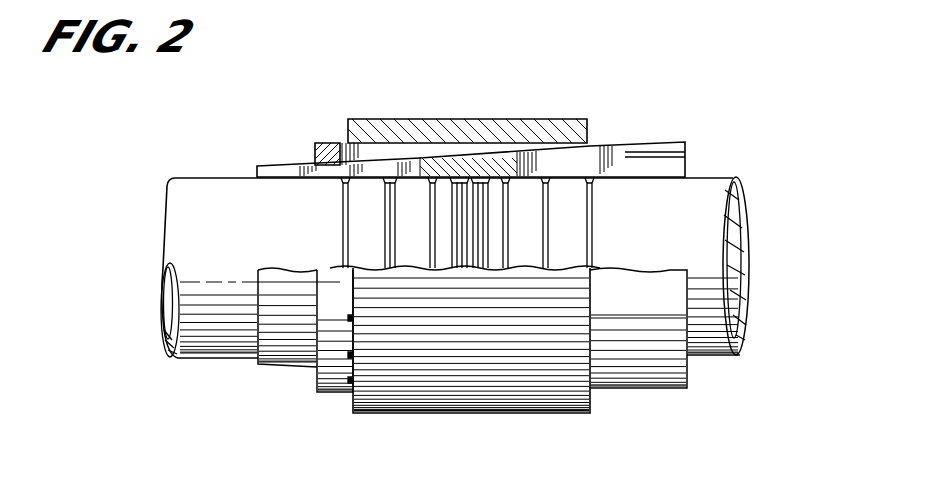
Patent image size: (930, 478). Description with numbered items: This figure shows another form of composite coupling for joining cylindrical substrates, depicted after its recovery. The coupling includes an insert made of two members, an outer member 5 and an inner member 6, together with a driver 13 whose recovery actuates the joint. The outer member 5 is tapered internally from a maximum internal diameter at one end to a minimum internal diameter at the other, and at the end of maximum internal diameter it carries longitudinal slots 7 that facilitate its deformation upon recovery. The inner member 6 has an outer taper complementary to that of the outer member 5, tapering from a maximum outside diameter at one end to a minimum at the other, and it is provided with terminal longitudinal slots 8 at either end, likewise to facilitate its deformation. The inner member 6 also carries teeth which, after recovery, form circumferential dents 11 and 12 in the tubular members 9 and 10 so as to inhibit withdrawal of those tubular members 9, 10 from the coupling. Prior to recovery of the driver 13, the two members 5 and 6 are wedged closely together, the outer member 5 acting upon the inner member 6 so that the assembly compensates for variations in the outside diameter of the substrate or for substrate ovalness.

The outer member 5 is at (316, 142).
The inner member 6 is at (268, 165).
The longitudinal slots 7 is at (690, 378).
The terminal longitudinal slots 8 is at (258, 312).
The tubular member 9 is at (175, 218).
The tubular member 10 is at (700, 207).
The circumferential dent 11 is at (392, 212).
The circumferential dent 12 is at (548, 218).
The driver 13 is at (548, 118).